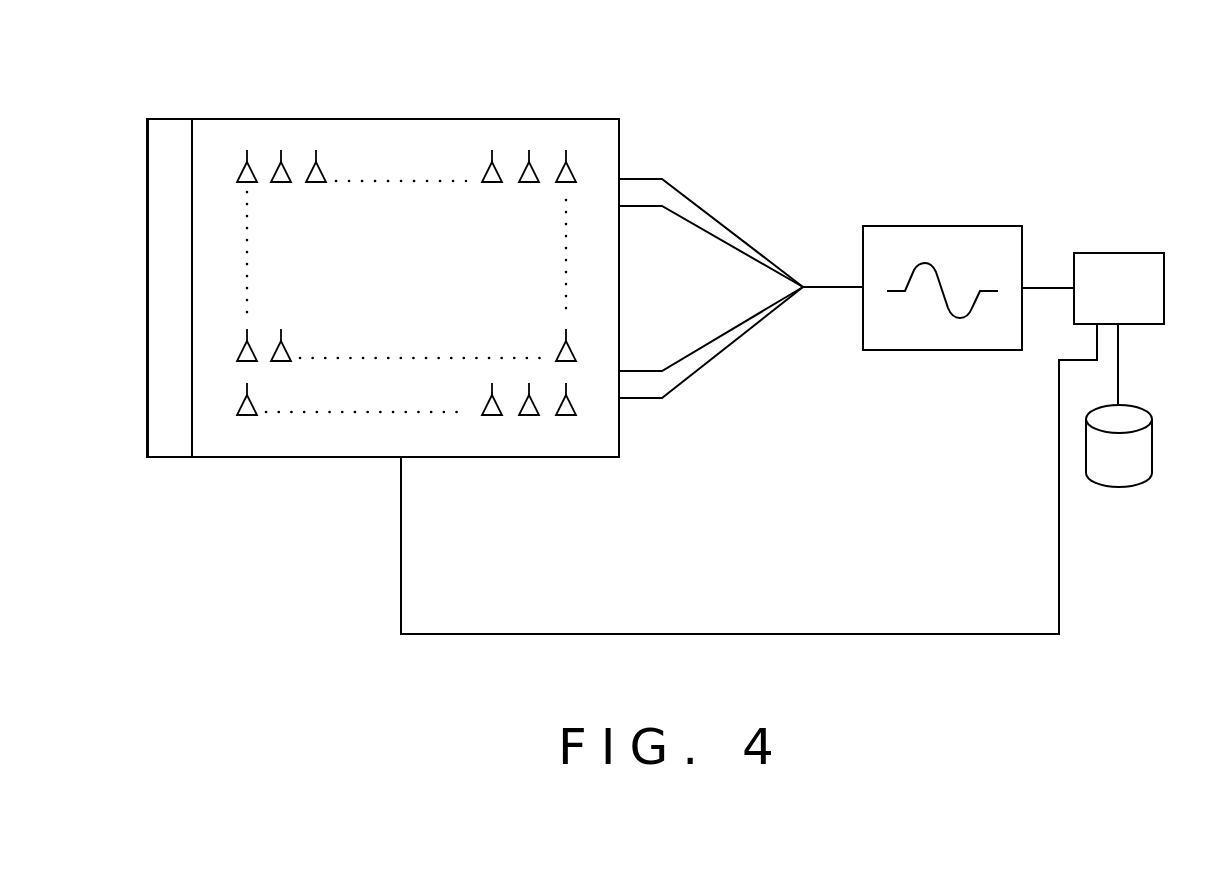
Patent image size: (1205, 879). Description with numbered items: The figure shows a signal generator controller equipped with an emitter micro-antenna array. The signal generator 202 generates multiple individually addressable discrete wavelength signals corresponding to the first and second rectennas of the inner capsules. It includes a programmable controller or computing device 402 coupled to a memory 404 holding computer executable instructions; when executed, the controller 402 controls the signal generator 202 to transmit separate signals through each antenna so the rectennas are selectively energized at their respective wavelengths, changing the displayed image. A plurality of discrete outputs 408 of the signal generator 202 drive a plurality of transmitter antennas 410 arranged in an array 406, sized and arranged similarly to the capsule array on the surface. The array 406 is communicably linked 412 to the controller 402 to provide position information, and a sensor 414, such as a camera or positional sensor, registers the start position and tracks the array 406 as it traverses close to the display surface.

The signal generator 202 is at (896, 226).
The programmable controller or computing device 402 is at (1110, 253).
The memory 404 is at (1118, 487).
The array 406 is at (383, 119).
The discrete outputs 408 is at (701, 175).
The transmitter antennas 410 is at (492, 418).
The communicable link 412 is at (777, 633).
The sensor 414 is at (172, 119).